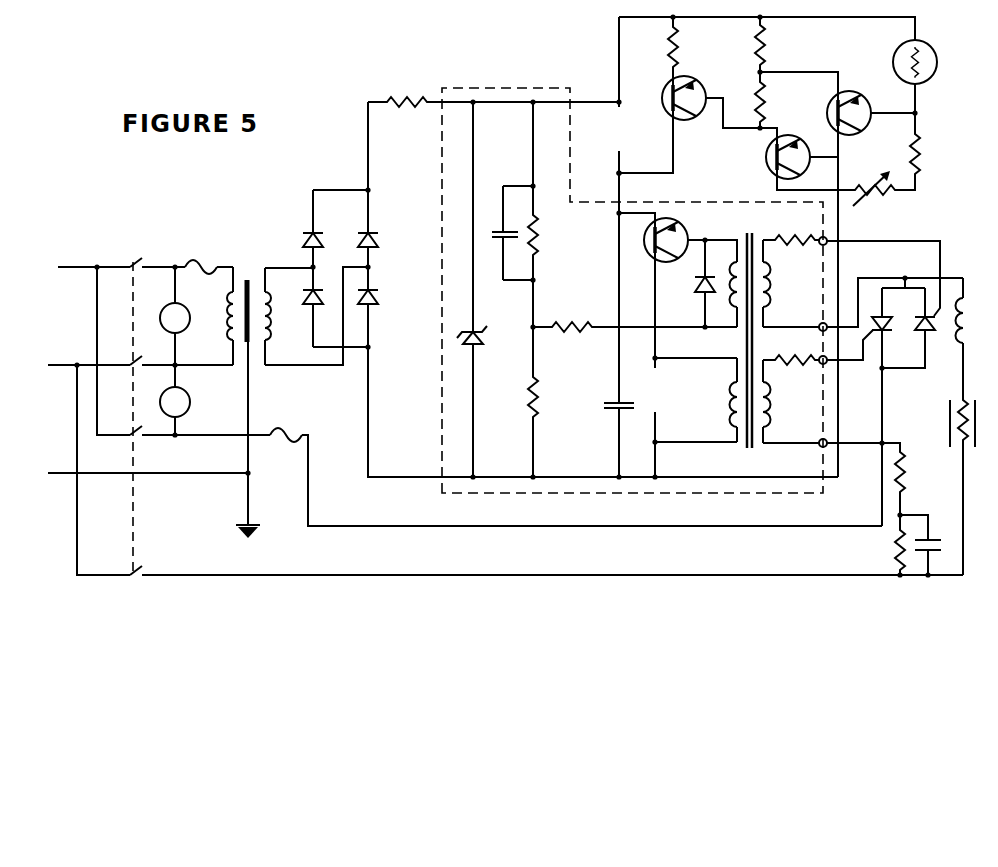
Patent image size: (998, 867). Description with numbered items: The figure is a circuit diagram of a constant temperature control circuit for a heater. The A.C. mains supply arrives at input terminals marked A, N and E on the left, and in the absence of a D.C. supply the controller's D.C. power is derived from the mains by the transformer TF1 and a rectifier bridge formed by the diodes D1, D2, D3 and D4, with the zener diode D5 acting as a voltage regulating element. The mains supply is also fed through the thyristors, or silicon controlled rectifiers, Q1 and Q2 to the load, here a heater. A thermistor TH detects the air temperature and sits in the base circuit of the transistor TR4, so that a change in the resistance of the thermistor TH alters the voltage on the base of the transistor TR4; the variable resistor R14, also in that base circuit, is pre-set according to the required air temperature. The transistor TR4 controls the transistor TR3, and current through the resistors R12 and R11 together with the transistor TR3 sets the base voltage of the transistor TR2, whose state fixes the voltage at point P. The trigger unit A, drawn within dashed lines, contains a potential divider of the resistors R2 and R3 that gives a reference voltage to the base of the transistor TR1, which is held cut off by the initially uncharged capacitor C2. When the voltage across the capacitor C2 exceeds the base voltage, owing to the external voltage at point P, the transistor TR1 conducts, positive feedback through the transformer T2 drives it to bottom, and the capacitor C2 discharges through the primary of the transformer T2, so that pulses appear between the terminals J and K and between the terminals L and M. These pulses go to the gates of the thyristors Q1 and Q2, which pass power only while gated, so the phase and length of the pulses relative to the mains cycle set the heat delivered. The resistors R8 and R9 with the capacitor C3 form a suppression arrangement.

The trigger unit A is at (552, 88).
The neutral terminal N is at (48, 365).
The earth terminal E is at (49, 473).
The transformer TF1 is at (249, 306).
The diode D1 is at (308, 231).
The diode D2 is at (306, 308).
The diode D3 is at (377, 231).
The diode D4 is at (377, 308).
The zener diode D5 is at (479, 346).
The resistor R2 is at (546, 235).
The resistor R3 is at (546, 397).
The capacitor C2 is at (608, 399).
The point P is at (613, 173).
The transistor TR1 is at (679, 234).
The transistor TR2 is at (696, 72).
The transistor TR3 is at (769, 157).
The transistor TR4 is at (850, 106).
The resistor R11 is at (781, 102).
The resistor R12 is at (781, 45).
The variable resistor R14 is at (878, 194).
The thermistor TH is at (921, 101).
The transformer T2 is at (751, 331).
The terminal J is at (820, 232).
The terminal K is at (817, 319).
The terminal L is at (821, 371).
The terminal M is at (815, 437).
The thyristor Q1 is at (890, 334).
The thyristor Q2 is at (934, 334).
The resistor R8 is at (914, 472).
The resistor R9 is at (886, 550).
The capacitor C3 is at (934, 538).